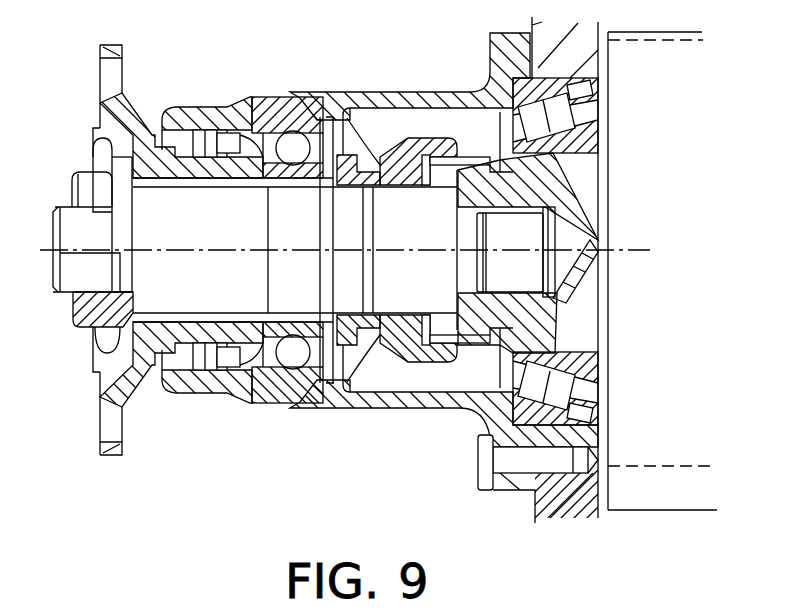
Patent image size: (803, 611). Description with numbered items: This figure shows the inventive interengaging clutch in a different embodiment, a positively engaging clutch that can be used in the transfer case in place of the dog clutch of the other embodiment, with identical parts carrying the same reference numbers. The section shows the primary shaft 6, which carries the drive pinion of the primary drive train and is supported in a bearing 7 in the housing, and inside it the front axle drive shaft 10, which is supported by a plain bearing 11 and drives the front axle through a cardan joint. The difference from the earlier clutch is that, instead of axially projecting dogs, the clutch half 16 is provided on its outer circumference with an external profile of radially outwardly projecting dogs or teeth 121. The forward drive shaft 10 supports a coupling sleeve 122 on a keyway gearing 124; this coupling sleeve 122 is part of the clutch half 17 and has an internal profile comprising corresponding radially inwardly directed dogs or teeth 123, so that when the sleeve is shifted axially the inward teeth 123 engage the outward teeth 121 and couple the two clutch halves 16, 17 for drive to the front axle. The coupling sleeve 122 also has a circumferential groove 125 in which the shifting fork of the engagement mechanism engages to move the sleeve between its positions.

The primary shaft 6 is at (553, 300).
The bearing 7 is at (540, 380).
The front axle drive shaft 10 is at (232, 307).
The plain bearing 11 is at (535, 230).
The clutch half 16 is at (472, 152).
The clutch half 17 is at (420, 133).
The dogs or teeth 121 is at (465, 365).
The coupling sleeve 122 is at (383, 345).
The dogs or teeth 123 is at (428, 368).
The keyway gearing 124 is at (380, 170).
The circumferential groove 125 is at (303, 320).